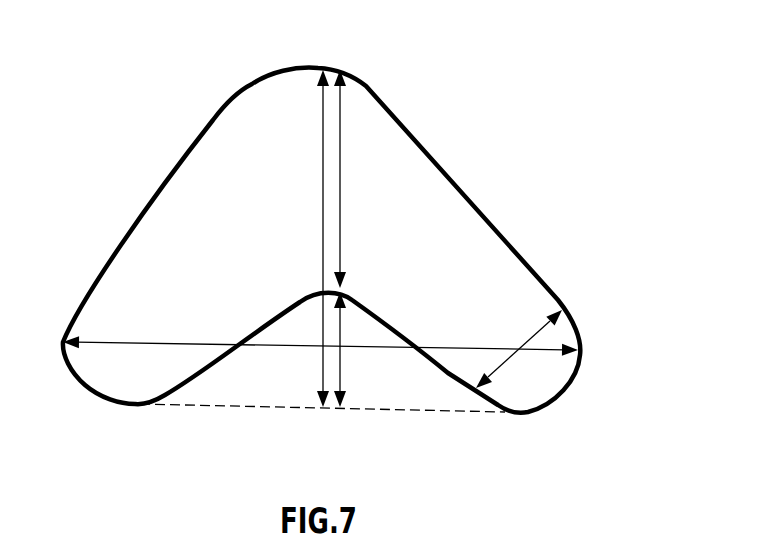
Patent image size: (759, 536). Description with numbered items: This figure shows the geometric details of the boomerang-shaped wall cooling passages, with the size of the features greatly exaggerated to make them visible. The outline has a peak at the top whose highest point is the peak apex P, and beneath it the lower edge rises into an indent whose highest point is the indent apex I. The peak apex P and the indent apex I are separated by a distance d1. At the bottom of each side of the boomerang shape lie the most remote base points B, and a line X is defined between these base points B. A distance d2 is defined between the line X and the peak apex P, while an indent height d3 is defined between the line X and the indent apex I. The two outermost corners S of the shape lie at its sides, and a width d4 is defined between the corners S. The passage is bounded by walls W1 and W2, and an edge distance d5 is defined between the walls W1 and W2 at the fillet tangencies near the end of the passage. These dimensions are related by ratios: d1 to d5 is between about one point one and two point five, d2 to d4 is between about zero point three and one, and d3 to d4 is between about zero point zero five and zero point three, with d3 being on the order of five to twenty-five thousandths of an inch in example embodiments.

The peak apex P is at (318, 68).
The indent apex I is at (320, 291).
The corners S is at (63, 344).
The base points B is at (135, 406).
The line X is at (200, 408).
The wall W1 is at (448, 376).
The wall W2 is at (558, 293).
The distance d1 is at (341, 110).
The distance d2 is at (320, 132).
The indent height d3 is at (342, 327).
The width d4 is at (184, 341).
The edge distance d5 is at (532, 333).